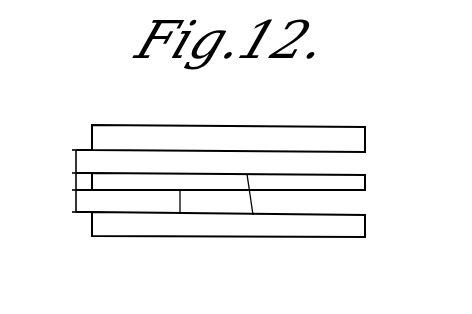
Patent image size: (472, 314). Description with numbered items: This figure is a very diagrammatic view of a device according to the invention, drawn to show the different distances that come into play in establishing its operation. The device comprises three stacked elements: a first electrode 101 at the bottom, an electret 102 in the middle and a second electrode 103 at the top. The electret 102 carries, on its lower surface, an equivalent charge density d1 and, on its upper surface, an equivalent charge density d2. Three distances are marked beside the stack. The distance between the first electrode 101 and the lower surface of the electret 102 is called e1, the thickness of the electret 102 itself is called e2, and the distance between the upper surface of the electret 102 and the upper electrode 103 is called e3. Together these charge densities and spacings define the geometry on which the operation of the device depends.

The first electrode 101 is at (352, 228).
The electret 102 is at (358, 182).
The second electrode 103 is at (358, 145).
The distance between first electrode and lower surface of electret e1 is at (75, 201).
The thickness of the electret e2 is at (75, 181).
The distance between upper surface of electret and upper electrode e3 is at (75, 162).
The equivalent charge density on lower surface of electret d1 is at (180, 214).
The equivalent charge density on upper surface of electret d2 is at (253, 215).